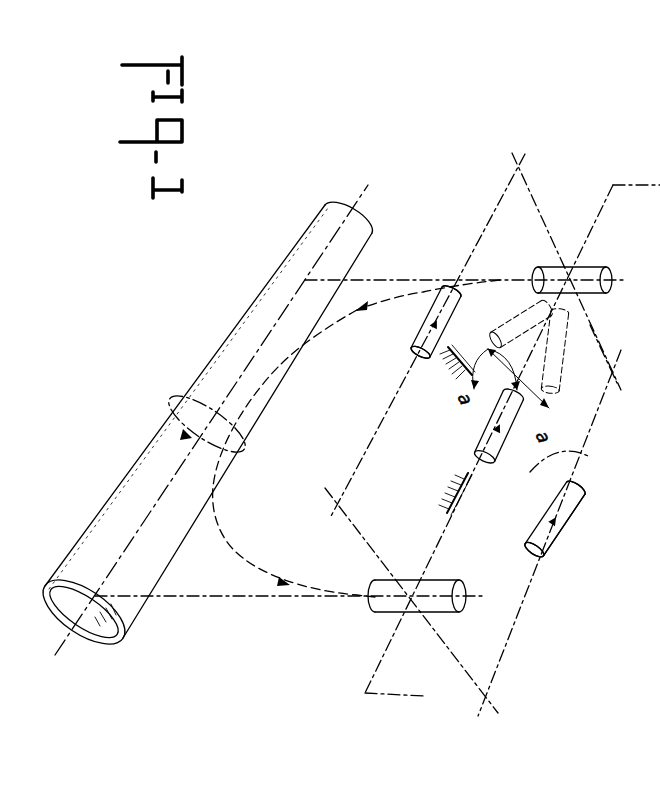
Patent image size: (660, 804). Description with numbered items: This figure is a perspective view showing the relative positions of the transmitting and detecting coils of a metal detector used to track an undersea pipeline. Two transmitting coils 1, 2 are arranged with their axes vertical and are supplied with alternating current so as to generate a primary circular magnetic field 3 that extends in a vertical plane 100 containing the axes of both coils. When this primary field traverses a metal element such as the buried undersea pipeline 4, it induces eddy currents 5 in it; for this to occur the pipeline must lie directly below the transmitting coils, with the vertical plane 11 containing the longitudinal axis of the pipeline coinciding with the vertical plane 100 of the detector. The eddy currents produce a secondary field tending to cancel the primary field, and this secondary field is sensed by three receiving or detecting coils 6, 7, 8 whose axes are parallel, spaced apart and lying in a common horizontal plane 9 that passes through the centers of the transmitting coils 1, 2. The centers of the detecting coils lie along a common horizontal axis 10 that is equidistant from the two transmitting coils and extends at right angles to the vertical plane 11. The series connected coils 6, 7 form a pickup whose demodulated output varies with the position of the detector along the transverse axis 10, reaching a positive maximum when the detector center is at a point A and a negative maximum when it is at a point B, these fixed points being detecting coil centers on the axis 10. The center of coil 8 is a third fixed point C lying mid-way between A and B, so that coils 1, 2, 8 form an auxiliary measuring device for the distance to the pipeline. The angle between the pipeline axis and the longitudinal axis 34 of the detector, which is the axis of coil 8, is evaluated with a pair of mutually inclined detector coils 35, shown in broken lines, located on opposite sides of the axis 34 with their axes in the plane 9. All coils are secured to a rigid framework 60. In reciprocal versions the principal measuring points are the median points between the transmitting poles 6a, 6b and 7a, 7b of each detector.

The transmitting coil 1 is at (440, 610).
The transmitting coil 2 is at (581, 268).
The primary circular magnetic field 3 is at (243, 557).
The buried undersea pipeline 4 is at (137, 605).
The eddy currents 5 is at (170, 407).
The detecting coil 6 is at (420, 327).
The transmitting pole 6a is at (413, 356).
The transmitting pole 6b is at (450, 286).
The detecting coil 7 is at (567, 527).
The transmitting pole 7a is at (548, 554).
The transmitting pole 7b is at (578, 492).
The detecting coil 8 is at (495, 458).
The common horizontal plane 9 is at (537, 203).
The common horizontal axis 10 is at (575, 467).
The vertical plane containing the pipeline axis 11 is at (388, 278).
The longitudinal axis of the detector 34 is at (460, 472).
The mutually inclined detector coils 35 is at (600, 392).
The rigid framework 60 is at (455, 380).
The vertical plane of the detector 100 is at (410, 697).
The fixed point A is at (452, 331).
The fixed point B is at (563, 538).
The third fixed point C is at (505, 376).